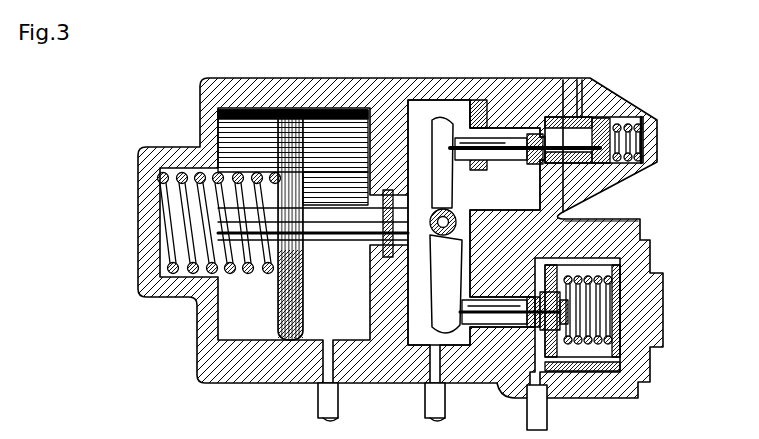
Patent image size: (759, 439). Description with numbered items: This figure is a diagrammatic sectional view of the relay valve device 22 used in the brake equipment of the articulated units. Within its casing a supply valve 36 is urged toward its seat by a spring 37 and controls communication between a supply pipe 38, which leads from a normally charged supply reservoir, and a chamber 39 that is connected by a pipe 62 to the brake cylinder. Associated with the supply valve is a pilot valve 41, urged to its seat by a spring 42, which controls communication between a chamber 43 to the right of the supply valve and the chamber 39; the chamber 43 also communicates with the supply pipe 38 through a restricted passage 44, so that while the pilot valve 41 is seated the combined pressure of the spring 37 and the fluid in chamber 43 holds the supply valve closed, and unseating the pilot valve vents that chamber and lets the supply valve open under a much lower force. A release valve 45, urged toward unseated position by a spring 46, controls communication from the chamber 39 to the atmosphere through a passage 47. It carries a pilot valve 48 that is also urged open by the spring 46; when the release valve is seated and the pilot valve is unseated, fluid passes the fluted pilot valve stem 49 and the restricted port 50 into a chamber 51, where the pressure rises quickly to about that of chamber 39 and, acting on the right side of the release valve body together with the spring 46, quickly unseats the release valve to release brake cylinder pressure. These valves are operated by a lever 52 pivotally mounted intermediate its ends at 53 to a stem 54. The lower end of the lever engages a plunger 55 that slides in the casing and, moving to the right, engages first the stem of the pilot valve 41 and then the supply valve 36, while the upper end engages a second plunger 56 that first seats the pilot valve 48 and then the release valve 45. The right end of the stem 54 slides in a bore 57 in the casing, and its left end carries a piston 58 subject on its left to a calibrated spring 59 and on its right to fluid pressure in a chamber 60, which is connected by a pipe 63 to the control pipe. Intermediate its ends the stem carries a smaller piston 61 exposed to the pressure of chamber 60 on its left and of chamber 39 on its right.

The relay valve device 22 is at (382, 66).
The supply valve 36 is at (525, 353).
The spring 37 is at (615, 332).
The supply pipe 38 is at (542, 428).
The chamber 39 is at (440, 335).
The pilot valve 41 is at (582, 300).
The spring 42 is at (605, 318).
The chamber 43 is at (642, 358).
The restricted passage 44 is at (577, 372).
The release valve 45 is at (548, 118).
The spring 46 is at (638, 124).
The passage 47 is at (592, 68).
The pilot valve 48 is at (520, 137).
The fluted pilot valve stem 49 is at (628, 186).
The port 50 is at (598, 118).
The chamber 51 is at (646, 162).
The lever 52 is at (442, 190).
The pivot 53 is at (436, 211).
The stem 54 is at (485, 208).
The plunger 55 is at (470, 300).
The second plunger 56 is at (463, 112).
The bore 57 is at (563, 221).
The piston 58 is at (280, 307).
The calibrated spring 59 is at (165, 217).
The chamber 60 is at (320, 330).
The smaller piston 61 is at (385, 250).
The pipe 62 is at (440, 395).
The pipe 63 is at (333, 395).